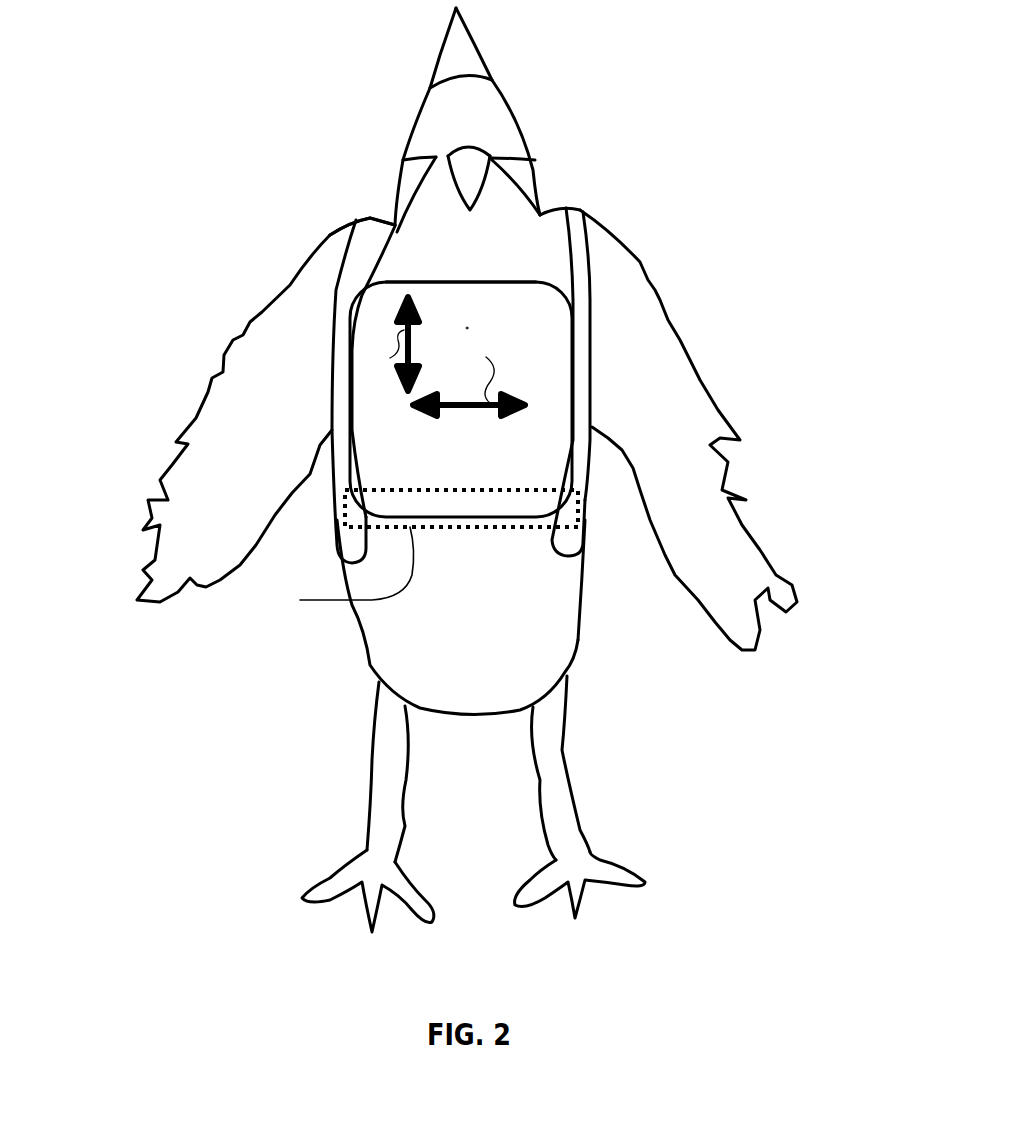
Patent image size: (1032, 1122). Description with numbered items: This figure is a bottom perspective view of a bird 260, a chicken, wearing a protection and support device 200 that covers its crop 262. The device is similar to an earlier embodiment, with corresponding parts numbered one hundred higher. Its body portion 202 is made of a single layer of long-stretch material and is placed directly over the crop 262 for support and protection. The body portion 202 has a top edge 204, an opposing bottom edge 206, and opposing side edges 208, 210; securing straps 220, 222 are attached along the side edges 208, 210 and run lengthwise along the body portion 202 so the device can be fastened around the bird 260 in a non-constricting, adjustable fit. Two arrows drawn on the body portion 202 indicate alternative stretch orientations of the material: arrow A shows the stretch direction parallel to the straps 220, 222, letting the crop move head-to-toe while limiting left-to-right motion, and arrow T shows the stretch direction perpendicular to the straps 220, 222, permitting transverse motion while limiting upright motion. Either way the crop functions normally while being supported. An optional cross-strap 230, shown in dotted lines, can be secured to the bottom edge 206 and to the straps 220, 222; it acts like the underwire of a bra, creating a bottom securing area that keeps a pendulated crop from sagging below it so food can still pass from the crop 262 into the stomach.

The protection and support device 200 is at (607, 122).
The body portion 202 is at (485, 471).
The top edge 204 is at (415, 282).
The bottom edge 206 is at (460, 520).
The side edge 208 is at (352, 412).
The side edge 210 is at (573, 413).
The strap 220 is at (352, 280).
The strap 222 is at (572, 283).
The cross-strap 230 is at (300, 600).
The bird 260 is at (300, 250).
The crop 262 is at (466, 329).